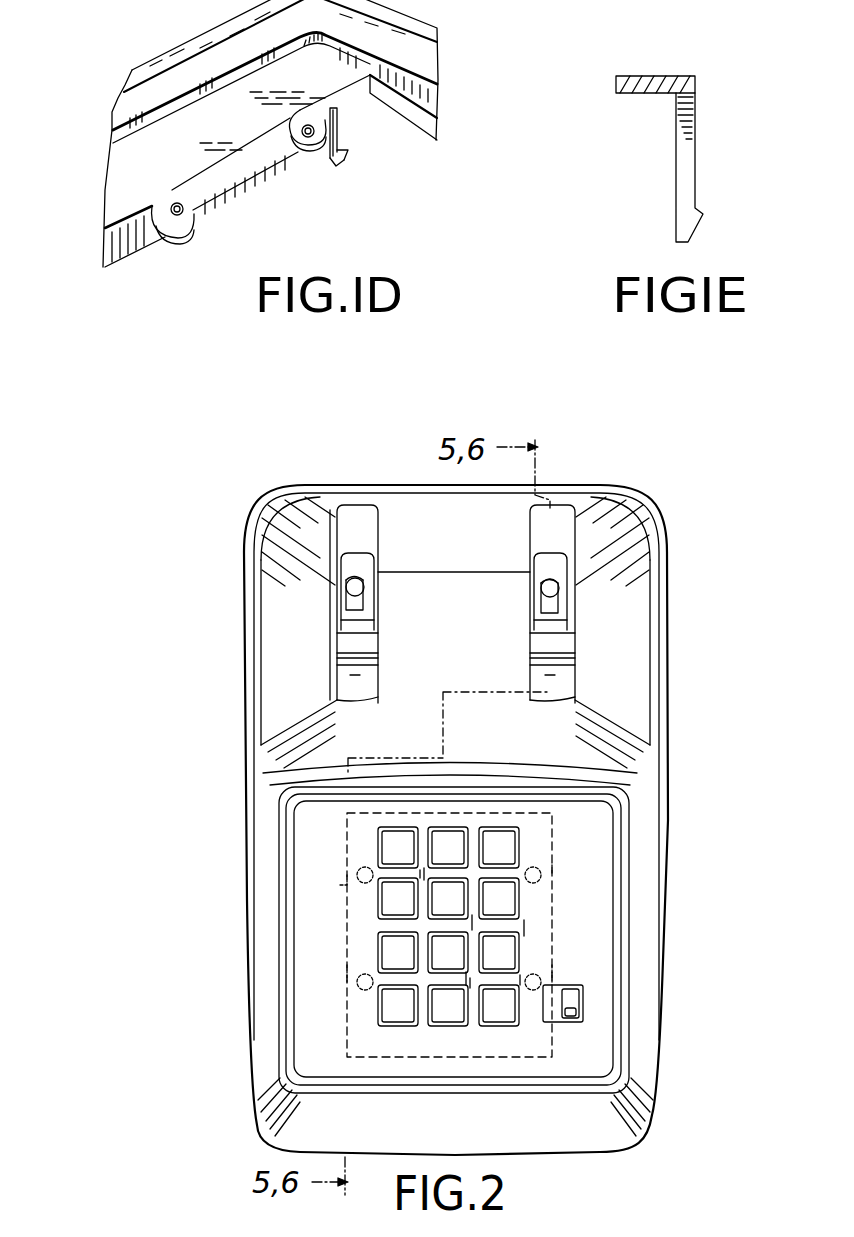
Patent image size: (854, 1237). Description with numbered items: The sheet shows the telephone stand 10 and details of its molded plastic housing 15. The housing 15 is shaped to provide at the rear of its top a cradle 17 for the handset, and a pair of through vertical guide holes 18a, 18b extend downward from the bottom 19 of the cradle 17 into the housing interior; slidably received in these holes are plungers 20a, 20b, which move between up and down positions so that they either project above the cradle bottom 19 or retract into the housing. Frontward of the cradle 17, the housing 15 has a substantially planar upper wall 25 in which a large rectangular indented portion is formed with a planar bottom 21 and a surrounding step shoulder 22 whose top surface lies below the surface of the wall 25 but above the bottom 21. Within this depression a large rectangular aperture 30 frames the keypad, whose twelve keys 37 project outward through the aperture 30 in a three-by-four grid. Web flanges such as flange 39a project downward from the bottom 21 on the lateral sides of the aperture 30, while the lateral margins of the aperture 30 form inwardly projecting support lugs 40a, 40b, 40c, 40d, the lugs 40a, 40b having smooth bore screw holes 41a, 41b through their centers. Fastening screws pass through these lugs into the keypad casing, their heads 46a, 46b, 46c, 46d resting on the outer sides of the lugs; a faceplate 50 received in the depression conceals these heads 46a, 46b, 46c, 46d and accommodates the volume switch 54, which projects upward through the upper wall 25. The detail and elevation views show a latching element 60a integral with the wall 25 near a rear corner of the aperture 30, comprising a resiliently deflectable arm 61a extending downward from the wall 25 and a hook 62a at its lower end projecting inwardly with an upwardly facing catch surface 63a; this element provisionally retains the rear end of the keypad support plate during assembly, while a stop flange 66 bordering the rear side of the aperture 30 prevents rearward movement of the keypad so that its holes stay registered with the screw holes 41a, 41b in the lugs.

In FIG. 2, the telephone stand 10 is at (692, 577).
In FIG. 2, the housing 15 is at (684, 903).
In FIG. 2, the cradle 17 is at (343, 574).
In FIG. 2, the guide hole 18a is at (345, 608).
In FIG. 2, the guide hole 18b is at (540, 607).
In FIG. 2, the bottom of cradle 19 is at (370, 620).
In FIG. 2, the plunger 20a is at (363, 580).
In FIG. 2, the plunger 20b is at (540, 575).
In FIG. 1D, the planar bottom 21 is at (207, 140).
In FIG. 1E, the planar bottom 21 is at (658, 75).
In FIG. 1D, the step shoulder 22 is at (275, 36).
In FIG. 1D, the upper wall 25 is at (180, 56).
In FIG. 1E, the upper wall 25 is at (614, 86).
In FIG. 2, the upper wall 25 is at (630, 828).
In FIG. 1D, the aperture 30 is at (285, 216).
In FIG. 2, the keys 37 is at (387, 977).
In FIG. 1D, the web flange 39a is at (213, 195).
In FIG. 1D, the support lug 40a is at (286, 162).
In FIG. 2, the support lug 40a is at (358, 880).
In FIG. 1D, the support lug 40b is at (171, 212).
In FIG. 2, the support lug 40b is at (365, 975).
In FIG. 2, the support lug 40c is at (552, 862).
In FIG. 2, the support lug 40d is at (552, 962).
In FIG. 1D, the screw hole 41a is at (303, 128).
In FIG. 1D, the screw hole 41b is at (176, 204).
In FIG. 2, the screw head 46a is at (357, 871).
In FIG. 2, the screw head 46b is at (358, 988).
In FIG. 2, the screw head 46c is at (541, 875).
In FIG. 2, the screw head 46d is at (543, 981).
In FIG. 2, the faceplate 50 is at (312, 830).
In FIG. 2, the volume switch 54 is at (580, 1012).
In FIG. 1D, the latching element 60a is at (384, 162).
In FIG. 1D, the resiliently deflectable arm 61a is at (338, 118).
In FIG. 1E, the resiliently deflectable arm 61a is at (692, 146).
In FIG. 1D, the hook 62a is at (352, 152).
In FIG. 1E, the hook 62a is at (690, 236).
In FIG. 1D, the catch surface 63a is at (348, 152).
In FIG. 1E, the catch surface 63a is at (698, 226).
In FIG. 1D, the stop flange 66 is at (436, 121).